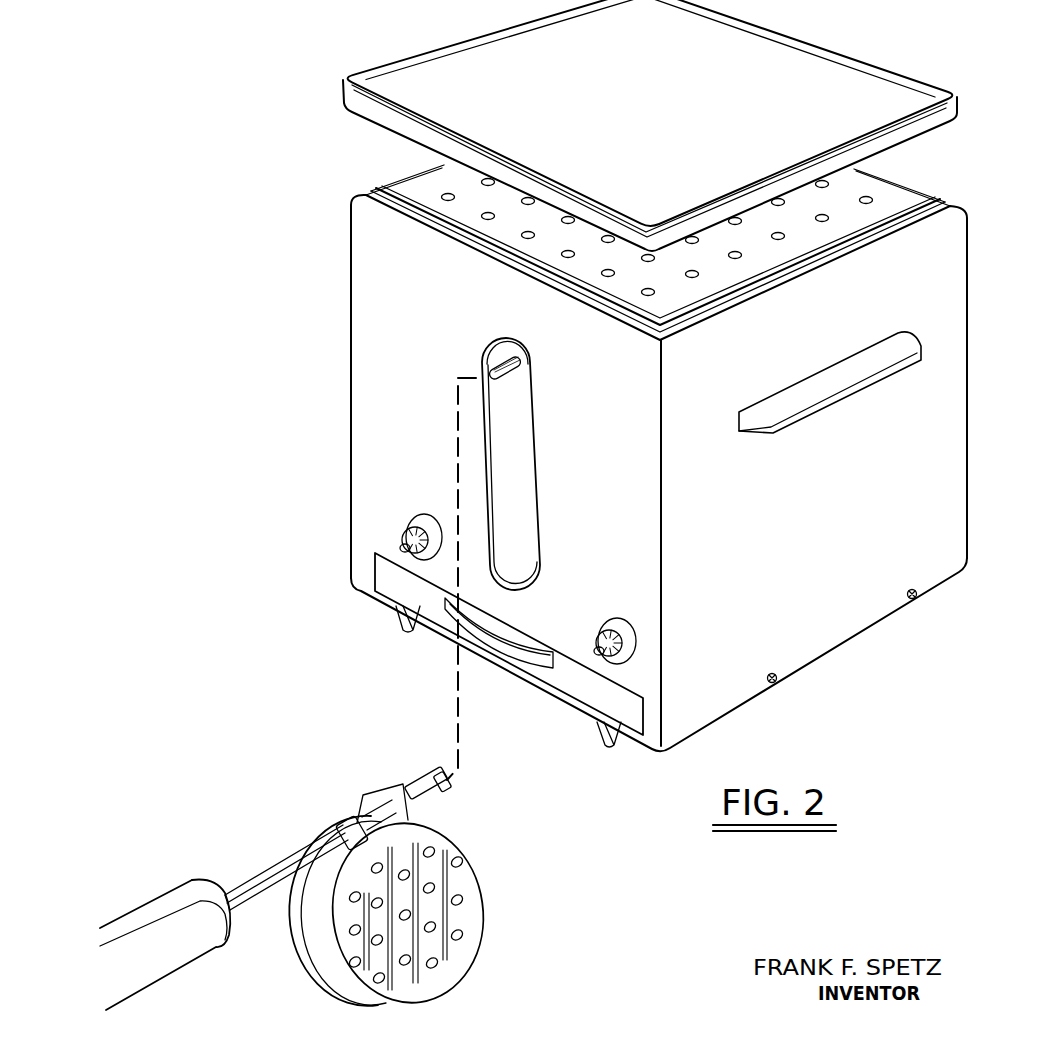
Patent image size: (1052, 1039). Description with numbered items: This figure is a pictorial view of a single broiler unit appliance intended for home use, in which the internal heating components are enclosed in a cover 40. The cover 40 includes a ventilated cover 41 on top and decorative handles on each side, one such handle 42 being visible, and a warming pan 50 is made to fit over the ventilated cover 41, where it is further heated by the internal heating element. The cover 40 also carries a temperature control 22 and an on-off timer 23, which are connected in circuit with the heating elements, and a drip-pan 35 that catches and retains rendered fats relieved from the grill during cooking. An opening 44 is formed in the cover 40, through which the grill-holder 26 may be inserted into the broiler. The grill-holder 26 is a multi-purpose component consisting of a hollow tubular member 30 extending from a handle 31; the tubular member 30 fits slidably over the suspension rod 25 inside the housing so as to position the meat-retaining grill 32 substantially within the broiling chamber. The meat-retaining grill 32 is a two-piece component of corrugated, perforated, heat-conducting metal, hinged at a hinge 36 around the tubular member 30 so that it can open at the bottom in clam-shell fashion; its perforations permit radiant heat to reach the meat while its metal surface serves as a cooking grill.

The warming pan 50 is at (847, 52).
The ventilated cover 41 is at (824, 223).
The cover 40 is at (814, 653).
The decorative handle 42 is at (871, 390).
The opening 44 is at (522, 458).
The suspension rod 25 is at (530, 379).
The temperature control 22 is at (418, 512).
The on-off timer 23 is at (613, 616).
The drip-pan 35 is at (397, 587).
The grill-holder 26 is at (321, 884).
The tubular member 30 is at (283, 857).
The handle 31 is at (142, 908).
The meat-retaining grill 32 is at (479, 920).
The hinge 36 is at (366, 806).